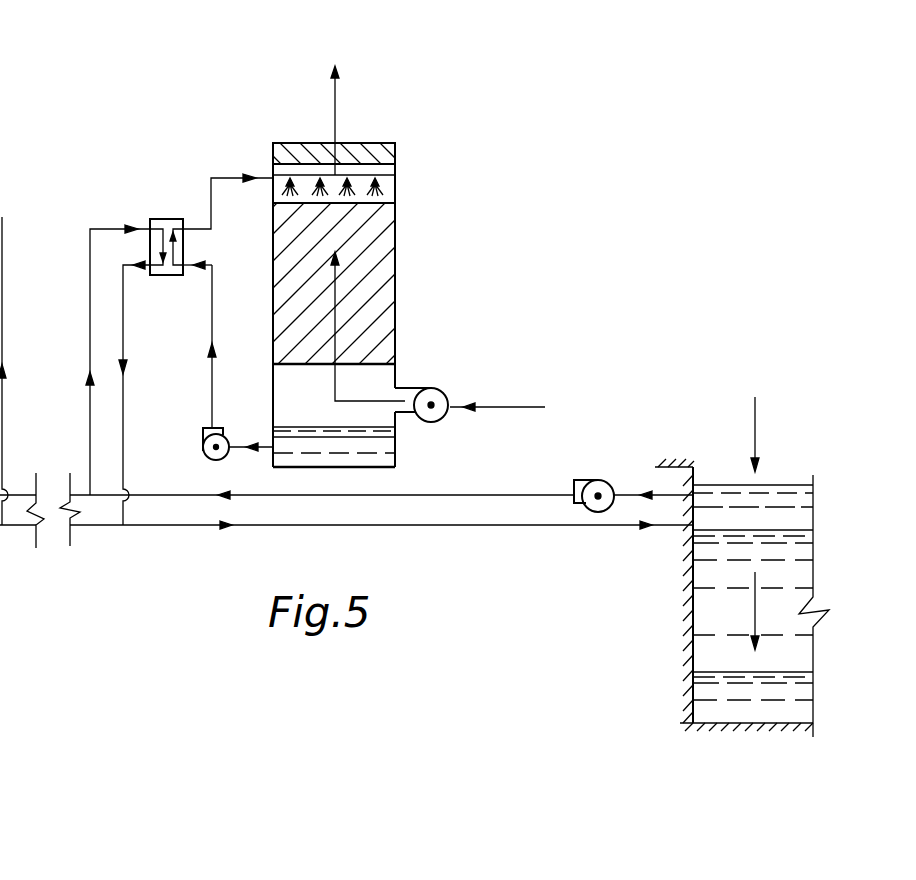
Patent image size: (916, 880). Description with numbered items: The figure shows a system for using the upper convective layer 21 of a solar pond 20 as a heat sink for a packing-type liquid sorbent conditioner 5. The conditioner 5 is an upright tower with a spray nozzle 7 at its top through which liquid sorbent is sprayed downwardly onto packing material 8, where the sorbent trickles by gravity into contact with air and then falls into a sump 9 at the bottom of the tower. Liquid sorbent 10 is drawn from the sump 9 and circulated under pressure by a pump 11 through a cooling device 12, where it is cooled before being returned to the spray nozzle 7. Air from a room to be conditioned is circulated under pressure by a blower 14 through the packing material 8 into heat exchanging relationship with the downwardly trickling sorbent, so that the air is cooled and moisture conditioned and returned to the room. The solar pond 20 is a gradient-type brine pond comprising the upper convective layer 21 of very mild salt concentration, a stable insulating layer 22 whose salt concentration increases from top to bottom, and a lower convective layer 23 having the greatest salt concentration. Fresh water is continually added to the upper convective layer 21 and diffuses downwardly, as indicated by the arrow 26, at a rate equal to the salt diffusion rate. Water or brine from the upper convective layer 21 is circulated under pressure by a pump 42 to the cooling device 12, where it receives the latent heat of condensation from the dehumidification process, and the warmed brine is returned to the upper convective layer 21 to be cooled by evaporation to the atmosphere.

The conditioner 5 is at (378, 143).
The spray nozzle 7 is at (378, 178).
The packing material 8 is at (372, 247).
The sump 9 is at (395, 448).
The liquid sorbent 10 is at (362, 460).
The pump 11 is at (203, 447).
The cooling device 12 is at (165, 219).
The blower 14 is at (432, 388).
The solar pond 20 is at (780, 479).
The upper convective layer 21 is at (800, 521).
The stable insulating layer 22 is at (800, 571).
The lower convective layer 23 is at (800, 693).
The arrow 26 is at (752, 598).
The pump 42 is at (590, 480).